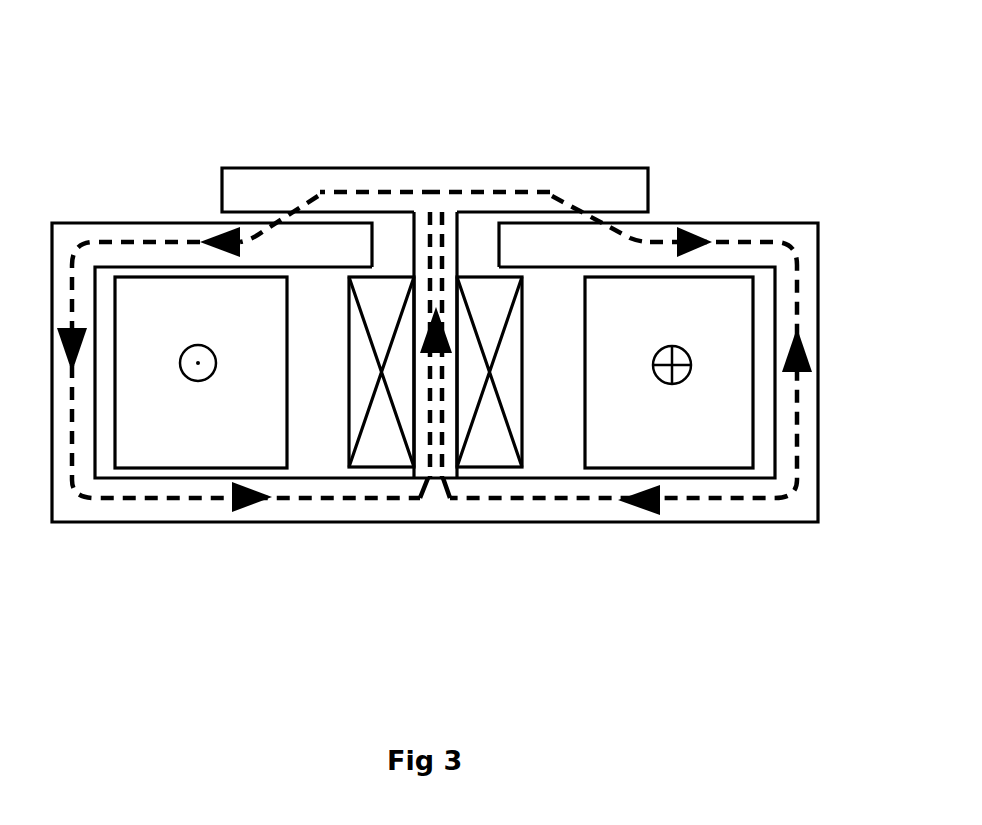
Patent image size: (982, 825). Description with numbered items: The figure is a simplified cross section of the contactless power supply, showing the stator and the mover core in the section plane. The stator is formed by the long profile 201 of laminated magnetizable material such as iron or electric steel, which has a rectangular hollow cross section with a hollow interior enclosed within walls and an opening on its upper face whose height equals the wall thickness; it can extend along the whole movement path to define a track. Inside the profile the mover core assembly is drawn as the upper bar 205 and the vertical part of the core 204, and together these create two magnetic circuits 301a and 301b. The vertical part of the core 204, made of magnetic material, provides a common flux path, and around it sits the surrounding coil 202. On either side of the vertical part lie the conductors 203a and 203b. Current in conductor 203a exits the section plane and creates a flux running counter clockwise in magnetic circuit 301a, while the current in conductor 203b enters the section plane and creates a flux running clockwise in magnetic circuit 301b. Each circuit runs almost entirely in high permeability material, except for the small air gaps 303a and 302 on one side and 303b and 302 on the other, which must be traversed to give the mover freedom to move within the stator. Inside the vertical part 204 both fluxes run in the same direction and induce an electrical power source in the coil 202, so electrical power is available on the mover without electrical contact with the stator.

The long profile 201 is at (478, 512).
The coil 202 is at (480, 447).
The conductor 203a is at (185, 407).
The conductor 203b is at (675, 404).
The vertical part of the core 204 is at (418, 245).
The mover core assembly 205 is at (248, 178).
The magnetic circuit 301a is at (358, 184).
The magnetic circuit 301b is at (520, 181).
The air gap 302 is at (510, 475).
The air gap 303a is at (267, 214).
The air gap 303b is at (612, 214).